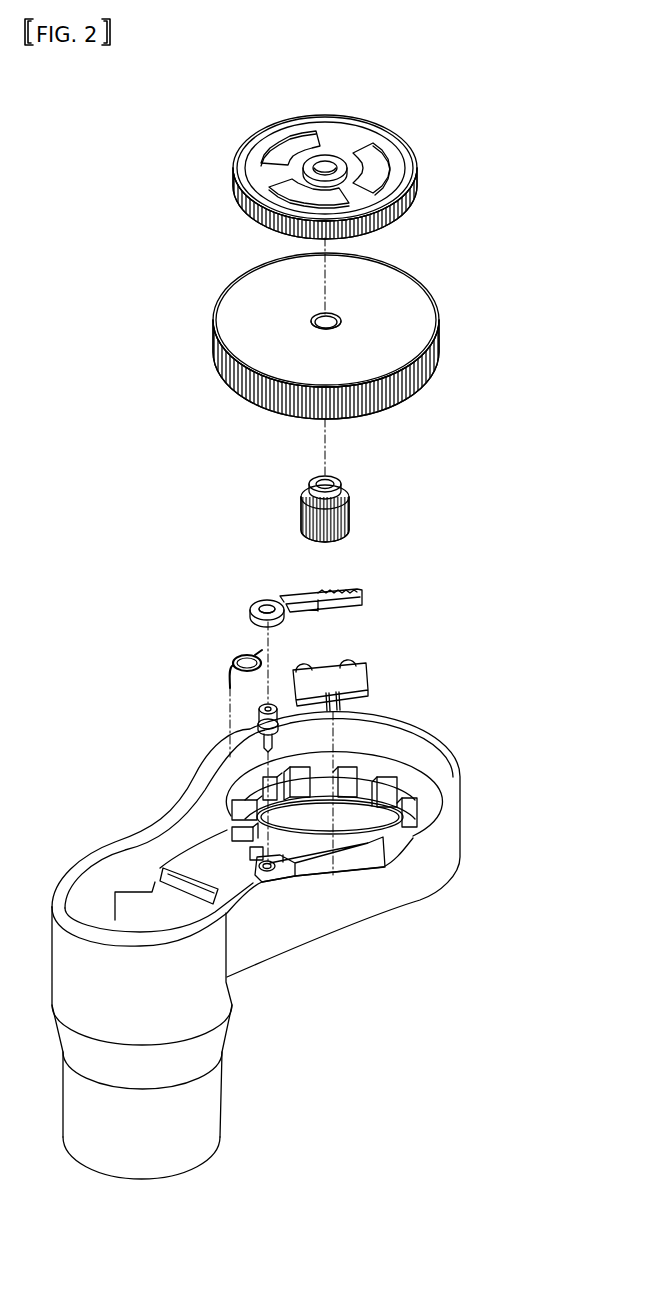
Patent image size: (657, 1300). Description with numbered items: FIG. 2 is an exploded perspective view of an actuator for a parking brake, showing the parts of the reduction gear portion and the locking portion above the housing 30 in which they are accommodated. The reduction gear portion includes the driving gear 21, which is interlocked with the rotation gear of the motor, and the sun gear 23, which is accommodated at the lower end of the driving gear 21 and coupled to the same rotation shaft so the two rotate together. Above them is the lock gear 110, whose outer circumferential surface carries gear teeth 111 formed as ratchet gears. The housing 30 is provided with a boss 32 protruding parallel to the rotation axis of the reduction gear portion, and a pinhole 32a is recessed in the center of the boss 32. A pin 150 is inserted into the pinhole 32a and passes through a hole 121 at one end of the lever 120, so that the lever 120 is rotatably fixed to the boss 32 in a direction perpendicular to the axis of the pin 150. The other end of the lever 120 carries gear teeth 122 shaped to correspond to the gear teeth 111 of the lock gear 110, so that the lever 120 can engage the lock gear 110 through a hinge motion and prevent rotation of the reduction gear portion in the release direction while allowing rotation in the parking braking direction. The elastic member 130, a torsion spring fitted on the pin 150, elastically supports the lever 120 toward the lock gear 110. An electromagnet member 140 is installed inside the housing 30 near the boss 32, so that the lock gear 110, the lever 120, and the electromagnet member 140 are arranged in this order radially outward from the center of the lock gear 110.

The lock gear 110 is at (357, 177).
The gear teeth 111 is at (415, 187).
The driving gear 21 is at (432, 307).
The sun gear 23 is at (338, 492).
The lever 120 is at (335, 594).
The hole 121 is at (267, 604).
The gear teeth 122 is at (340, 590).
The elastic member 130 is at (236, 663).
The electromagnet member 140 is at (370, 673).
The pin 150 is at (258, 736).
The housing 30 is at (256, 945).
The boss 32 is at (320, 918).
The pinhole 32a is at (269, 869).